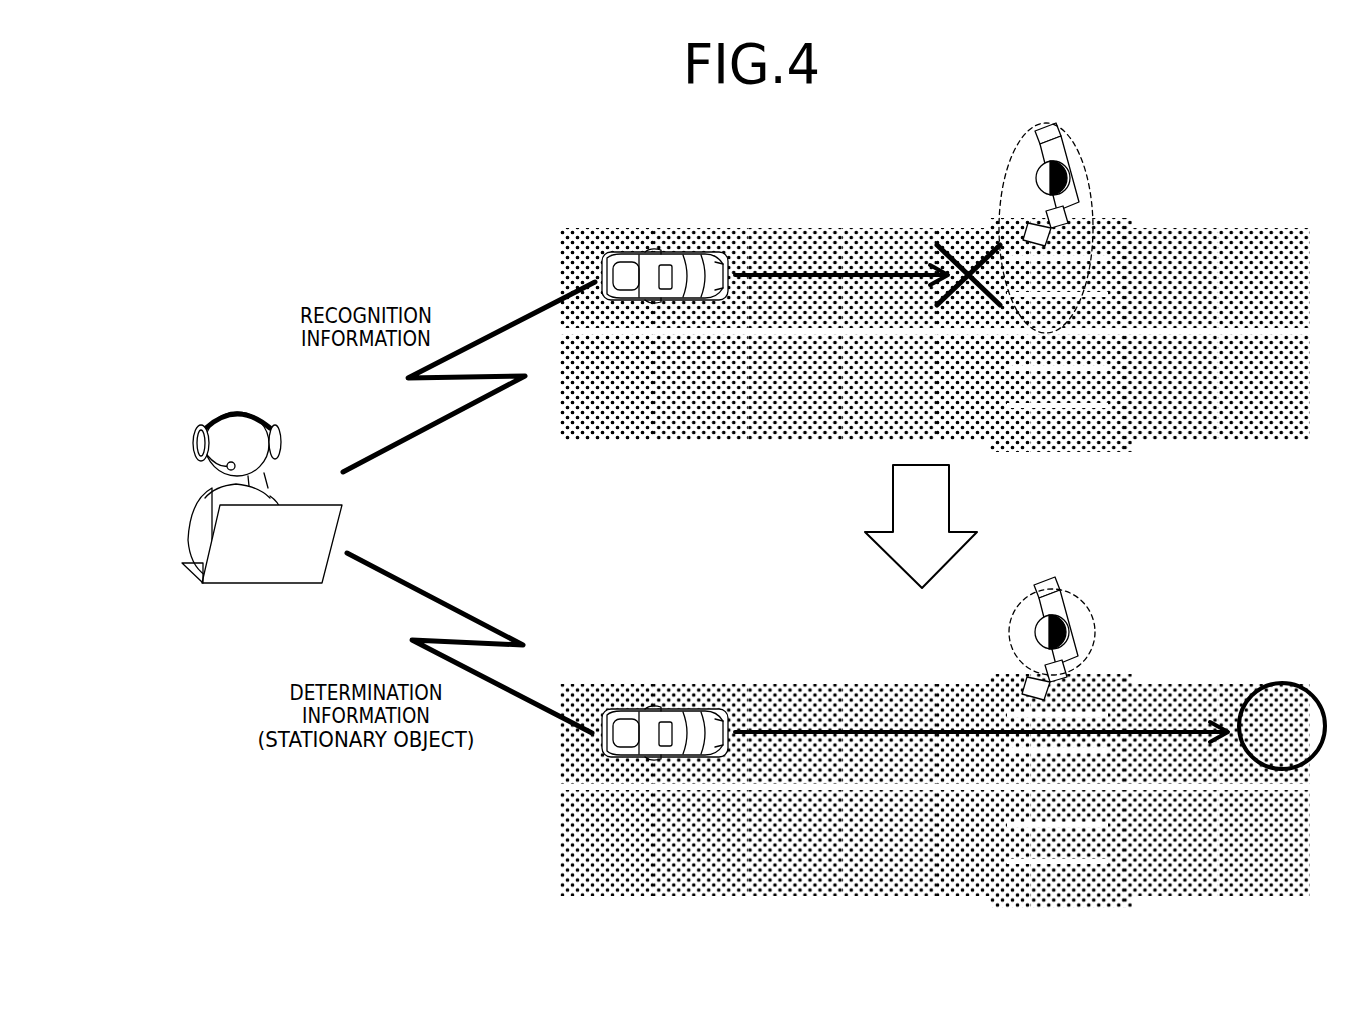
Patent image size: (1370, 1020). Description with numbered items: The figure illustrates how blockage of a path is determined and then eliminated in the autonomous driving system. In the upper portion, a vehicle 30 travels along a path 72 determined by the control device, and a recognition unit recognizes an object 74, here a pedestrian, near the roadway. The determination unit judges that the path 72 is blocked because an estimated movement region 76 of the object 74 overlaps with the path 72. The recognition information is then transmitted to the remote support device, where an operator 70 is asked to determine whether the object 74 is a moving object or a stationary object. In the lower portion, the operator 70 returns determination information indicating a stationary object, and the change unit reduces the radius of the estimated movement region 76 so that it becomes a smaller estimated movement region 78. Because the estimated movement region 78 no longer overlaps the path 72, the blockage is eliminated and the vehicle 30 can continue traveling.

The vehicle 30 is at (670, 258).
The operator 70 is at (242, 412).
The path 72 is at (826, 275).
The object 74 is at (1043, 160).
The estimated movement region 76 is at (1090, 155).
The estimated movement region 78 is at (1088, 602).